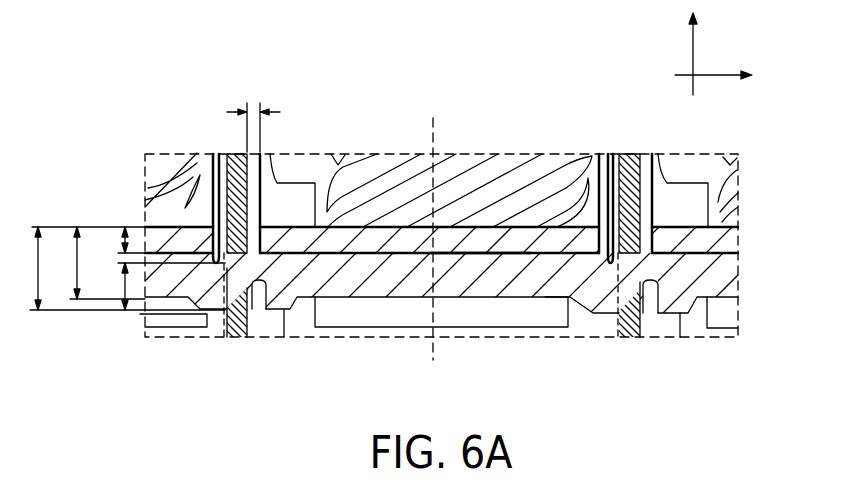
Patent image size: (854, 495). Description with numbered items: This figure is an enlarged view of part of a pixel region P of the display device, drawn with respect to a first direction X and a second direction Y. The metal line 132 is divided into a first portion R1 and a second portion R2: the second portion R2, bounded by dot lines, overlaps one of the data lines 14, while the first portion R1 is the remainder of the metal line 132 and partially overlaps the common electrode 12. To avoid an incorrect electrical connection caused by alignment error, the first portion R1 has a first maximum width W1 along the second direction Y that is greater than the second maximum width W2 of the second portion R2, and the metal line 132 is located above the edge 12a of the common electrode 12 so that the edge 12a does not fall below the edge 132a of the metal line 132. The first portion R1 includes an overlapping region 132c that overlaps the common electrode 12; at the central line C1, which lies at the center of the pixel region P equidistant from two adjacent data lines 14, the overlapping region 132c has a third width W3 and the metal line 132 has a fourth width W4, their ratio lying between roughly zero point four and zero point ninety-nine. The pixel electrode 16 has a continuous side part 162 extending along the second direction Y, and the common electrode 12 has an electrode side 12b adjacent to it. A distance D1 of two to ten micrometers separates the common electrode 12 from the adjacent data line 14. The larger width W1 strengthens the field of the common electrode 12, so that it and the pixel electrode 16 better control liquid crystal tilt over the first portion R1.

The common electrode 12 is at (738, 238).
The edge of the common electrode 12a is at (481, 255).
The electrode side 12b is at (214, 198).
The metal line 132 is at (738, 283).
The edge of the metal line 132a is at (398, 297).
The overlapping region 132c is at (568, 243).
The data line 14 is at (630, 153).
The pixel electrode 16 is at (737, 160).
The continuous side part 162 is at (212, 173).
The first portion R1 is at (307, 282).
The second portion R2 is at (630, 338).
The pixel region P is at (533, 186).
The central line C1 is at (433, 226).
The distance D1 is at (253, 116).
The first maximum width W1 is at (112, 268).
The second maximum width W2 is at (108, 286).
The third width W3 is at (116, 240).
The fourth width W4 is at (94, 263).
The first direction X is at (724, 75).
The second direction Y is at (692, 47).